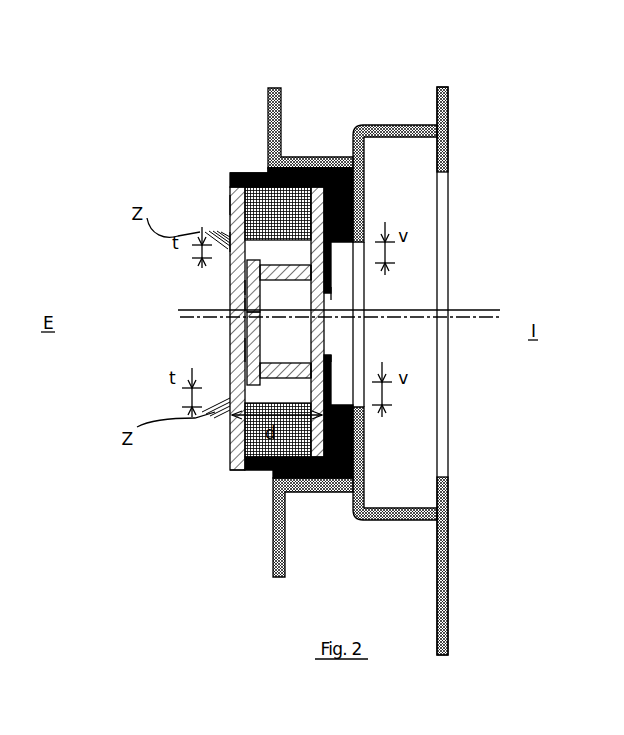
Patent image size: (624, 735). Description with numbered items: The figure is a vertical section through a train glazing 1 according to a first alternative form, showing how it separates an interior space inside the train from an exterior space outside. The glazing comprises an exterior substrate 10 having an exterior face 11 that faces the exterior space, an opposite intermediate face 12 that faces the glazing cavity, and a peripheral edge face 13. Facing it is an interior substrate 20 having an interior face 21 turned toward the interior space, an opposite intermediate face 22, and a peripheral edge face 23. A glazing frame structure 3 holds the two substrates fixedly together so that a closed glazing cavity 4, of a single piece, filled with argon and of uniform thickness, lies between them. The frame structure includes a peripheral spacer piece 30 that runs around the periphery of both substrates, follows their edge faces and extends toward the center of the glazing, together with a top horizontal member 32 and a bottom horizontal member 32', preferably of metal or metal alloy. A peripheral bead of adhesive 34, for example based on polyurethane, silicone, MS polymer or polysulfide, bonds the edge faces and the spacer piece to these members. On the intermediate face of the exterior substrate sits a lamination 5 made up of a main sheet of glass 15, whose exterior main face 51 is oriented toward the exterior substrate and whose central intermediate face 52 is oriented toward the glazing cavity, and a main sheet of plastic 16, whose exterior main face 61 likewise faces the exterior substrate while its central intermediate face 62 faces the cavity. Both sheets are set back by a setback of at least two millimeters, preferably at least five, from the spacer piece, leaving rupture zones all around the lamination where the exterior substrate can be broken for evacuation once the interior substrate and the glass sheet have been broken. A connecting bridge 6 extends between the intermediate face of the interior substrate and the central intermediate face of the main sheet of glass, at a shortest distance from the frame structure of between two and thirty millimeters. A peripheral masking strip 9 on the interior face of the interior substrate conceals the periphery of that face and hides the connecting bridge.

The glazing 1 is at (192, 48).
The glazing frame structure 3 is at (320, 97).
The top horizontal member 32 is at (395, 145).
The bottom horizontal member 32' is at (362, 500).
The peripheral bead of adhesive 34 is at (270, 480).
The exterior substrate 10 is at (230, 190).
The exterior face 11 is at (232, 195).
The intermediate face 12 is at (230, 208).
The peripheral edge face 13 is at (237, 472).
The exterior main face 61 is at (245, 290).
The central intermediate face 62 is at (240, 305).
The exterior main face 51 is at (245, 345).
The central intermediate face 52 is at (243, 355).
The peripheral spacer piece 30 is at (257, 190).
The peripheral edge face 23 is at (313, 187).
The main sheet of plastic 16 is at (243, 283).
The main sheet of glass 15 is at (253, 342).
The glazing cavity 4 is at (270, 303).
The connecting bridge 6 is at (303, 281).
The interior substrate 20 is at (355, 210).
The interior face 21 is at (327, 300).
The intermediate face 22 is at (353, 442).
The peripheral masking strip 9 is at (332, 357).
The lamination 5 is at (125, 236).